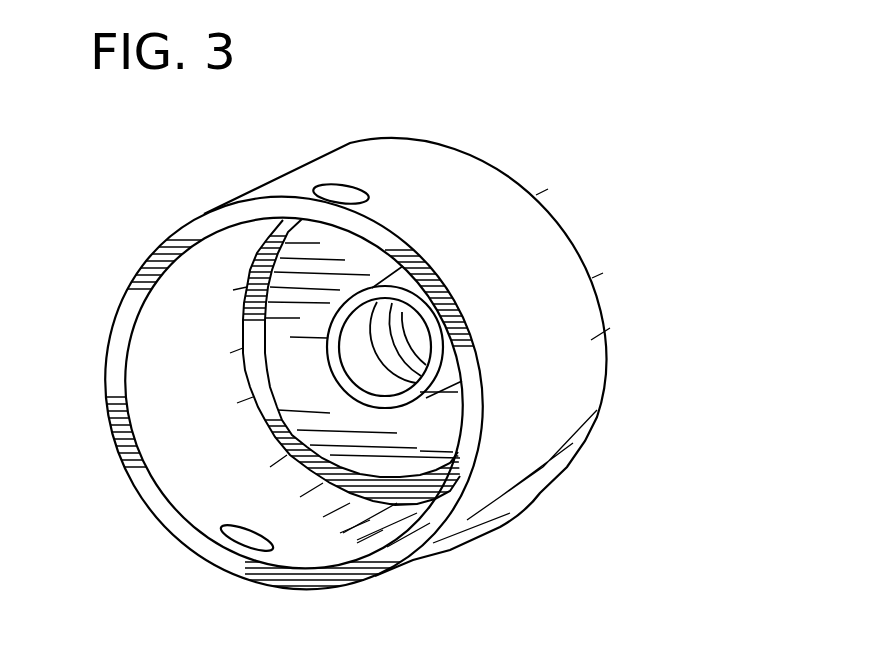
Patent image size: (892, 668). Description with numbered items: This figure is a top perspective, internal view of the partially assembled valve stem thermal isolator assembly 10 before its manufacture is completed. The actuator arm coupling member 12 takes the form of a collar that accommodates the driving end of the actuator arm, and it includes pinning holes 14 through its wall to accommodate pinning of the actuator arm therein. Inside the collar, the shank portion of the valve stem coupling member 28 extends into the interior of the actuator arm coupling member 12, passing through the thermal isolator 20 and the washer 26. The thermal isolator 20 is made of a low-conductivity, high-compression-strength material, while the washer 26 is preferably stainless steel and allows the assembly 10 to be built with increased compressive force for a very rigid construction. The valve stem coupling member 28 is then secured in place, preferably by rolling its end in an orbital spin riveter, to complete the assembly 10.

The valve stem thermal isolator assembly 10 is at (648, 196).
The actuator arm coupling member 12 is at (553, 427).
The pinning holes 14 is at (340, 196).
The thermal isolator 20 is at (290, 230).
The washer 26 is at (270, 342).
The valve stem coupling member 28 is at (337, 362).